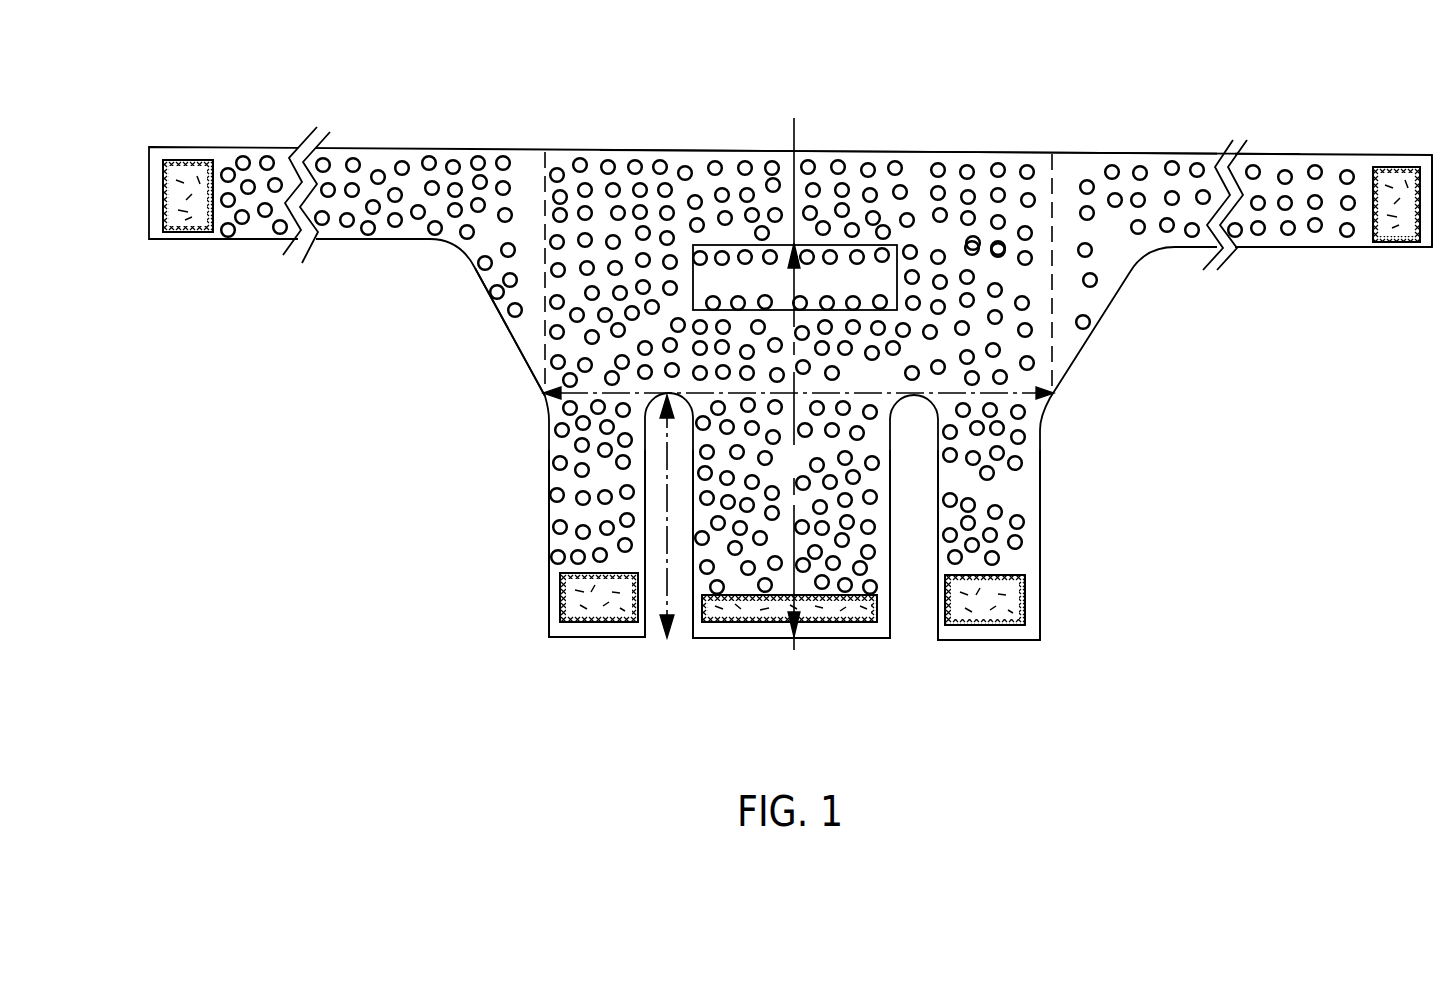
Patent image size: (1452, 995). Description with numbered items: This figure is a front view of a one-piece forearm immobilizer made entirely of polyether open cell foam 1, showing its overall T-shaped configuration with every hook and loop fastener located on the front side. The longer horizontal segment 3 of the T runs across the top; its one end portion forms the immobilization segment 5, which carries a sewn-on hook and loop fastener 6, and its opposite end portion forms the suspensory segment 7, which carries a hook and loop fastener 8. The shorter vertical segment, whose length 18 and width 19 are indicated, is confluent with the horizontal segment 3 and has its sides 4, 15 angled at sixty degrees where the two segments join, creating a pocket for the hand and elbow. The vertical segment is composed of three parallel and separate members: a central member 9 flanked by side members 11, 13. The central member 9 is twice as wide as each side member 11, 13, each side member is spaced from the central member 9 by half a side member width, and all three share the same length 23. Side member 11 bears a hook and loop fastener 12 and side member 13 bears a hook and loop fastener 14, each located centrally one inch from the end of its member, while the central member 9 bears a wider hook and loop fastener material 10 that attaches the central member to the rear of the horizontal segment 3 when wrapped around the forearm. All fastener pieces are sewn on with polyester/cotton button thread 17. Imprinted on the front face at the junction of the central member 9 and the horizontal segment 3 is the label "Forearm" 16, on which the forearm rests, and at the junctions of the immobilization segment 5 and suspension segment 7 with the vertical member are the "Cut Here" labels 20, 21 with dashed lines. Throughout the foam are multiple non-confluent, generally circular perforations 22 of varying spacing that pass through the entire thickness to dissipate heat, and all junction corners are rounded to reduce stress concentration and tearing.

The polyether open cell foam 1 is at (572, 255).
The horizontal segment 3 is at (912, 153).
The angled side 4 is at (522, 350).
The immobilization segment 5 is at (385, 243).
The hook and loop fastener 6 is at (193, 237).
The suspensory segment 7 is at (1285, 249).
The hook and loop fastener 8 is at (1372, 232).
The central member 9 is at (892, 532).
The hook and loop fastener material 10 is at (742, 620).
The side member 11 is at (1040, 451).
The hook and loop fastener 12 is at (1025, 583).
The side member 13 is at (549, 425).
The hook and loop fastener 14 is at (560, 587).
The angled side 15 is at (1058, 345).
The Forearm label 16 is at (692, 268).
The polyester/cotton button thread 17 is at (780, 447).
The vertical segment length 18 is at (794, 445).
The vertical segment width 19 is at (850, 392).
The Cut Here label 20 is at (540, 151).
The Cut Here label 21 is at (1052, 197).
The perforations 22 is at (265, 217).
The length of central member 23 is at (665, 475).